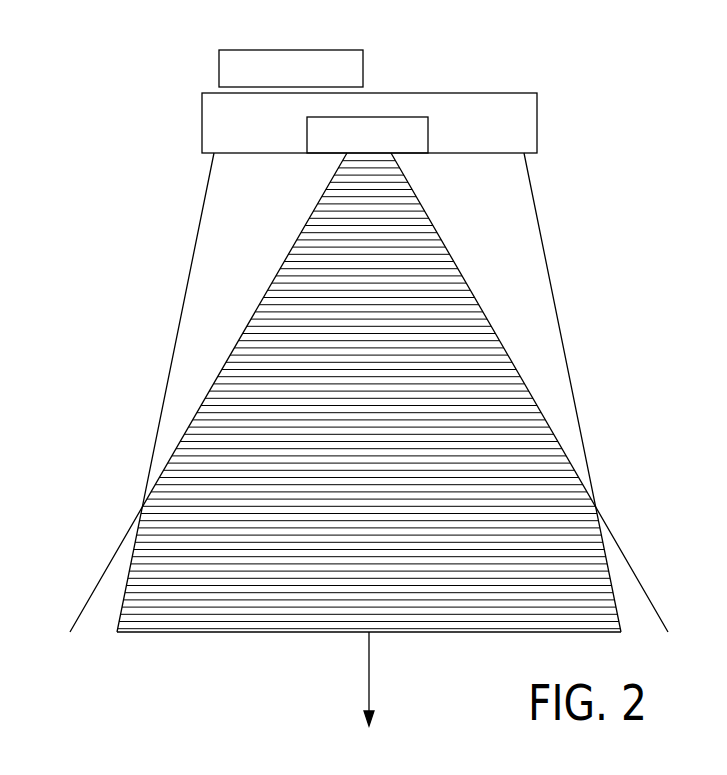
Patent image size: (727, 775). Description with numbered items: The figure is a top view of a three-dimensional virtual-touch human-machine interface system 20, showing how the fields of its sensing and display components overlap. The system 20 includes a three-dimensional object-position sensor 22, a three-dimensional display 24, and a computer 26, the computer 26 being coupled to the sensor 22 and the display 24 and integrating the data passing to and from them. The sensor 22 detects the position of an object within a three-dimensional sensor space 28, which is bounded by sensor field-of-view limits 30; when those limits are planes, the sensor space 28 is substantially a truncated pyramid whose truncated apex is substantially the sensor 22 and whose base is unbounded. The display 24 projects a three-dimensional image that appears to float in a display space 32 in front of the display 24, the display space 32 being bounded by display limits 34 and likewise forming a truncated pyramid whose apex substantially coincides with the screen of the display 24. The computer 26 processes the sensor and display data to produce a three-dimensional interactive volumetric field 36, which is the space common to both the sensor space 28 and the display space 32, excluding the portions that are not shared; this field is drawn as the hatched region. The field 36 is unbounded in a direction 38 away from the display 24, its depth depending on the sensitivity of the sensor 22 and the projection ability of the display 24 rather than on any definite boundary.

The three-dimensional virtual-touch human-machine interface system 20 is at (482, 693).
The three-dimensional object-position sensor 22 is at (402, 128).
The three-dimensional display 24 is at (510, 102).
The computer 26 is at (317, 58).
The sensor space 28 is at (387, 154).
The sensor field-of-view limits 30 is at (636, 572).
The display space 32 is at (251, 254).
The display limits 34 is at (561, 332).
The three-dimensional interactive volumetric field 36 is at (383, 362).
The direction 38 is at (368, 668).